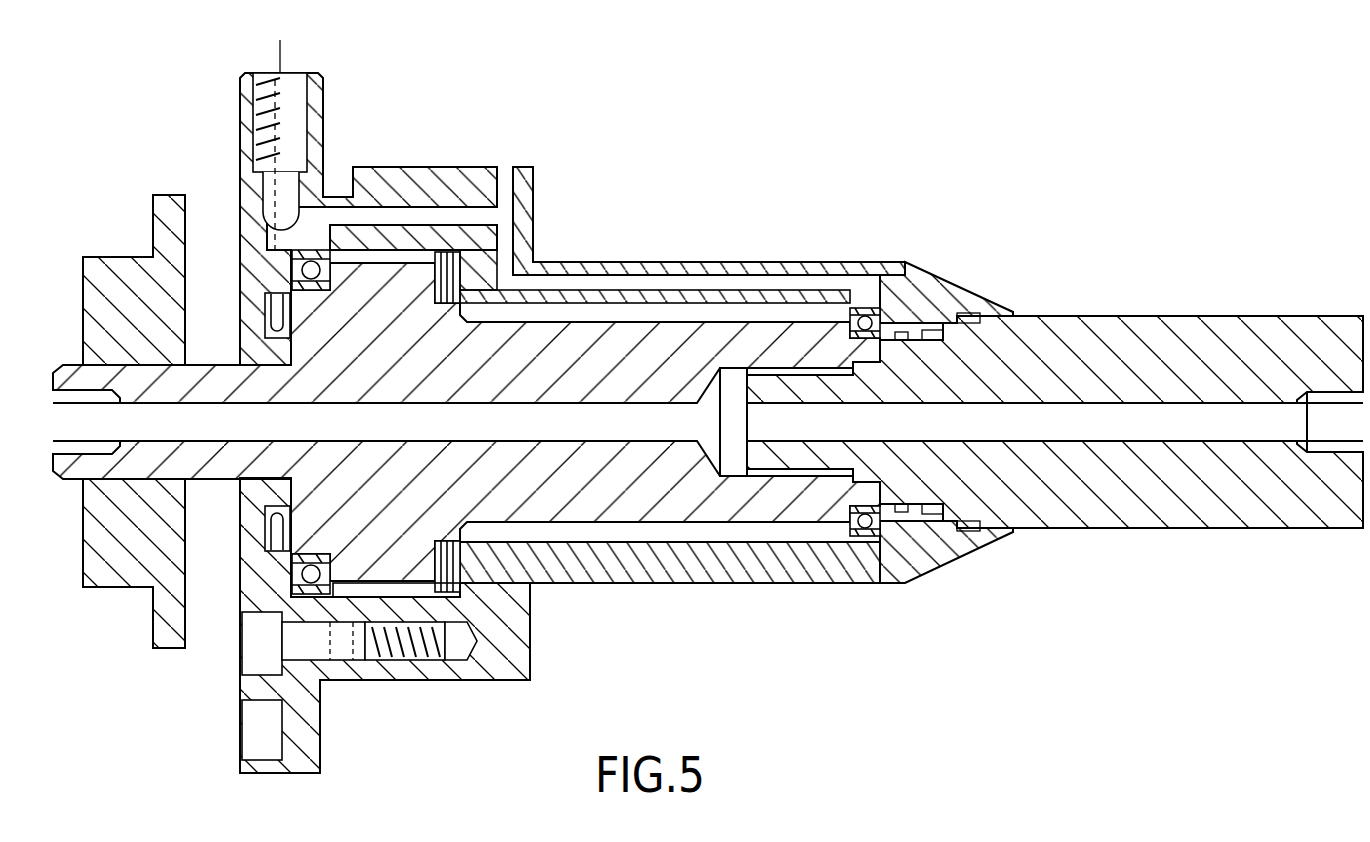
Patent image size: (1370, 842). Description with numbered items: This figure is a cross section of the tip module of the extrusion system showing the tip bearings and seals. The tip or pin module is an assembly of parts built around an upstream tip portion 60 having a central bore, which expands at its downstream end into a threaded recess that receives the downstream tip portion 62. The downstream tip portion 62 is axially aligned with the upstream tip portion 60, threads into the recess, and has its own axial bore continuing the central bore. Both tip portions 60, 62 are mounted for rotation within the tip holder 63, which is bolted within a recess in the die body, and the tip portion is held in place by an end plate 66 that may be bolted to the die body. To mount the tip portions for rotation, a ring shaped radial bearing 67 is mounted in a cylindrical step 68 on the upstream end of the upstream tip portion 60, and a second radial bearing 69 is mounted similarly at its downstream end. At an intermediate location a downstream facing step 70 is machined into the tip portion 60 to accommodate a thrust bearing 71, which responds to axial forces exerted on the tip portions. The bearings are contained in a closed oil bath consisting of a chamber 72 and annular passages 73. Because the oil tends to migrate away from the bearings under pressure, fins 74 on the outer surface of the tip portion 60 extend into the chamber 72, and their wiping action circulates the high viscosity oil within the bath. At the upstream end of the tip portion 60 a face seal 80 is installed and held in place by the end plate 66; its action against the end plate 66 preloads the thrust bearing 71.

The upstream tip portion 60 is at (562, 352).
The downstream tip portion 62 is at (1206, 343).
The tip holder 63 is at (650, 563).
The end plate 66 is at (240, 178).
The radial bearing 67 is at (863, 320).
The cylindrical step 68 is at (848, 514).
The second radial bearing 69 is at (296, 268).
The downstream facing step 70 is at (427, 277).
The thrust bearing 71 is at (446, 267).
The chamber 72 is at (403, 577).
The annular passages 73 is at (605, 528).
The fins 74 is at (380, 573).
The face seal 80 is at (276, 320).